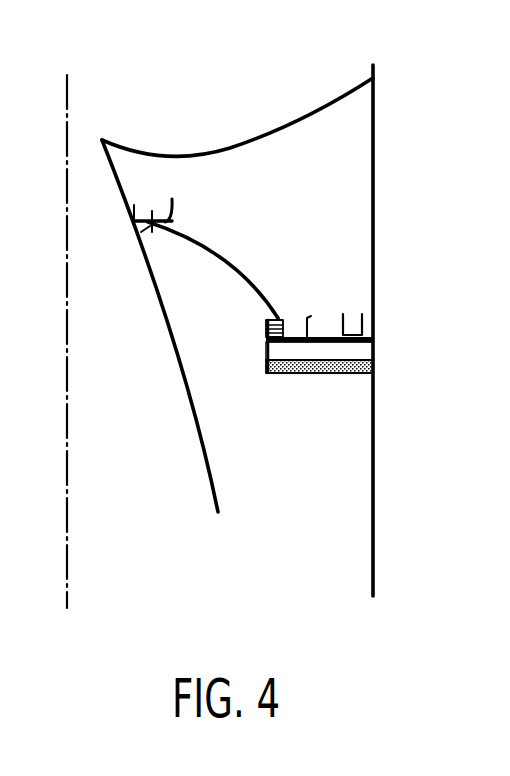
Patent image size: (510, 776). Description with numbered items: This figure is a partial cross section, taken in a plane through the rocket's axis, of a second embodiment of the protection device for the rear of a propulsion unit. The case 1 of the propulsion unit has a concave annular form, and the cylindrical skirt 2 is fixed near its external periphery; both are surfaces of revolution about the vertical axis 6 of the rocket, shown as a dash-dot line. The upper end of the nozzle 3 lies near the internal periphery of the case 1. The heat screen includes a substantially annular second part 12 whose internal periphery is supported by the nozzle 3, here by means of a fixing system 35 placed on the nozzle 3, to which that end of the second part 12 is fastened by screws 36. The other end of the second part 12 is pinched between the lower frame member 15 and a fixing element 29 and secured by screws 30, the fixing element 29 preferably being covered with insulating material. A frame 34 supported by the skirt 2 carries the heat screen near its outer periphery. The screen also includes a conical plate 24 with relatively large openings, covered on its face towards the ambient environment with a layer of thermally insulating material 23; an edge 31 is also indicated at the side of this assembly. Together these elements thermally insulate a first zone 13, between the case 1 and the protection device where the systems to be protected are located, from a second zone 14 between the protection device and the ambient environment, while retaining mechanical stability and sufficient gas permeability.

The case 1 is at (227, 148).
The skirt 2 is at (374, 122).
The nozzle 3 is at (208, 460).
The vertical axis 6 is at (67, 522).
The second part 12 is at (212, 252).
The first zone 13 is at (322, 177).
The second zone 14 is at (327, 464).
The lower frame member 15 is at (308, 317).
The layer of thermally insulating material 23 is at (357, 368).
The conical plate 24 is at (360, 348).
The fixing element 29 is at (266, 341).
The screws 30 is at (283, 318).
The side edge 31 is at (270, 374).
The frame 34 is at (364, 329).
The fixing system 35 is at (146, 214).
The screws 36 is at (145, 235).